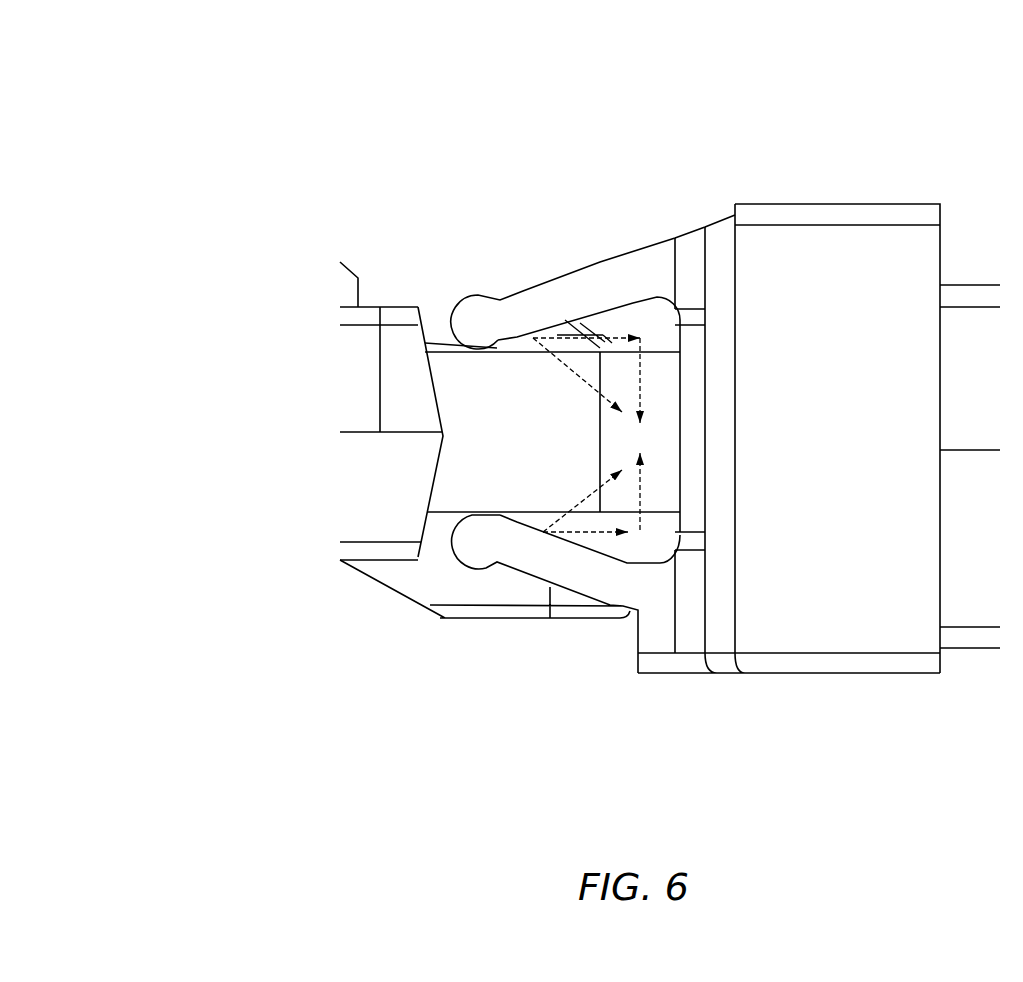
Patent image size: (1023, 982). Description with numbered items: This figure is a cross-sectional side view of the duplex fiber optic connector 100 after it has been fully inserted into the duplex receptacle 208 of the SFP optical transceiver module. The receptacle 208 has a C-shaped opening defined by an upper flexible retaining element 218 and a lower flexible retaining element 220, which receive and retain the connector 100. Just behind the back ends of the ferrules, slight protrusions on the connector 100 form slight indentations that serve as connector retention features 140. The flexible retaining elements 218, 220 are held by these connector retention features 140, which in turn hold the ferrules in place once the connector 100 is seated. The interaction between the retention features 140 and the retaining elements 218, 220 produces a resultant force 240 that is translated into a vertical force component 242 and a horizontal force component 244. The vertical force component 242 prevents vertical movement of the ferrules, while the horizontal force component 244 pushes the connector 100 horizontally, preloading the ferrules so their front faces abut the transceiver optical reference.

The duplex fiber optic connector 100 is at (372, 278).
The connector retention features 140 is at (518, 343).
The duplex receptacle 208 is at (745, 182).
The upper flexible retaining element 218 is at (470, 298).
The lower flexible retaining element 220 is at (465, 538).
The resultant force 240 is at (583, 492).
The vertical force component 242 is at (642, 390).
The horizontal force component 244 is at (588, 333).